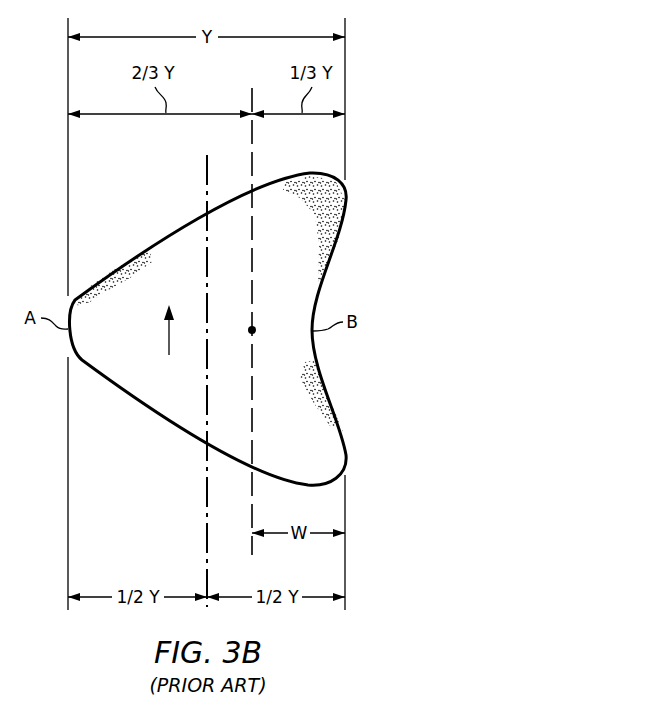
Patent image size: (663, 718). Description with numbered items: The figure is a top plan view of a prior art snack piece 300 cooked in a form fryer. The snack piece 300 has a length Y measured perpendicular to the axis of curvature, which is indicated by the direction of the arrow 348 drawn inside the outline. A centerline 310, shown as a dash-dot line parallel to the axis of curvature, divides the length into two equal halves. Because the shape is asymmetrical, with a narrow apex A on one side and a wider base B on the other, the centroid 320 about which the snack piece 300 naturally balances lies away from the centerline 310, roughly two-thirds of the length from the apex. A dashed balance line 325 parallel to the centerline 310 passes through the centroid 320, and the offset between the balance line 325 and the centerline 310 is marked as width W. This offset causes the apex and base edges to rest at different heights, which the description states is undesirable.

The snack piece 300 is at (388, 259).
The centerline 310 is at (205, 167).
The centroid 320 is at (258, 330).
The balance line 325 is at (253, 435).
The arrow 348 is at (167, 336).